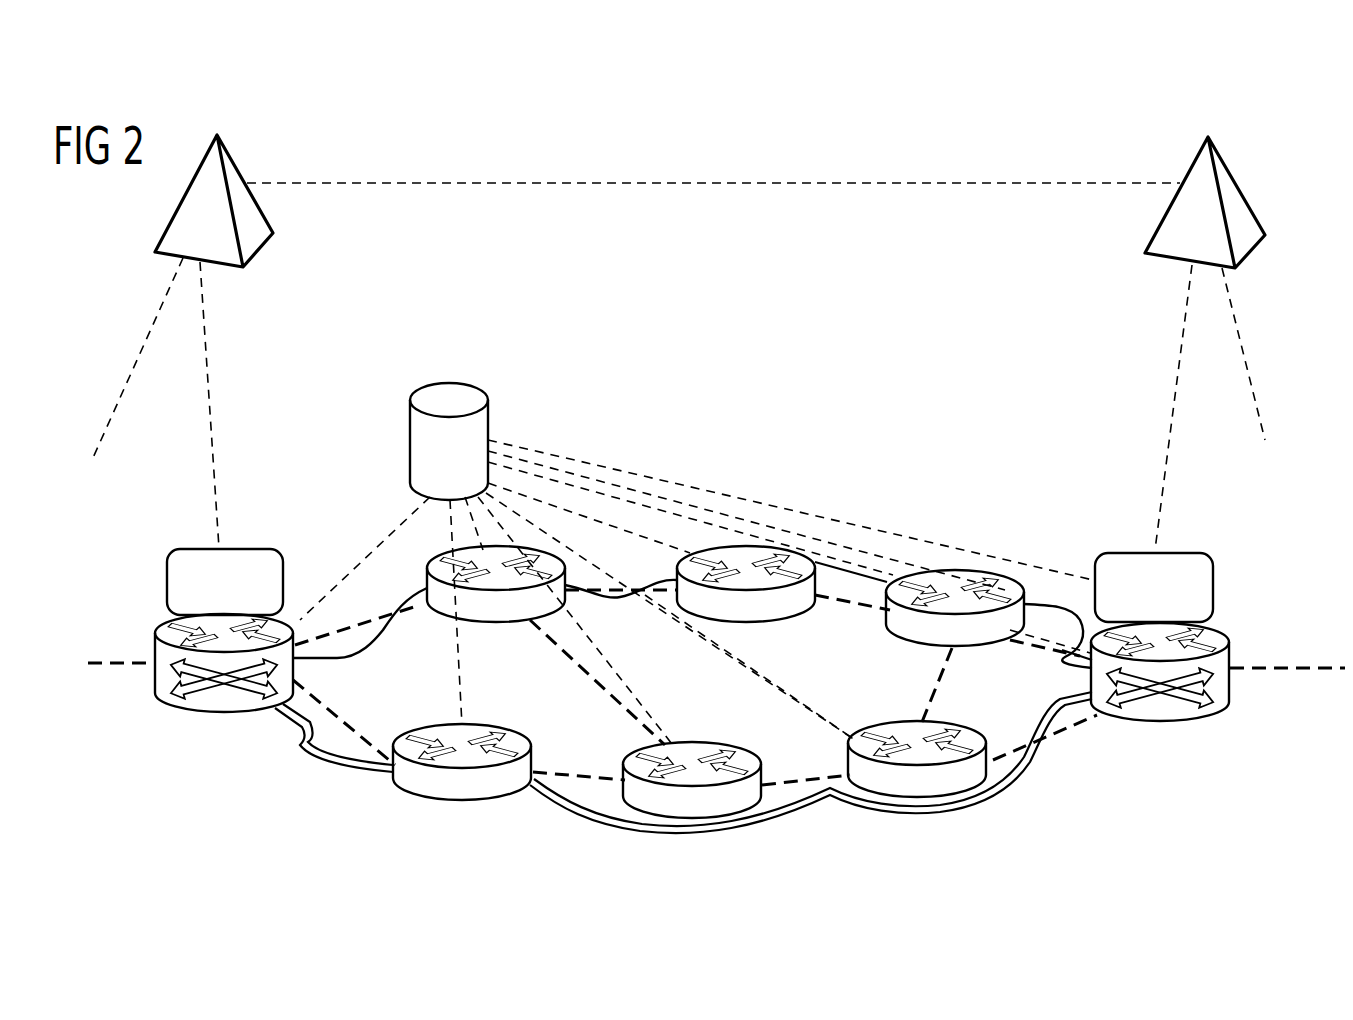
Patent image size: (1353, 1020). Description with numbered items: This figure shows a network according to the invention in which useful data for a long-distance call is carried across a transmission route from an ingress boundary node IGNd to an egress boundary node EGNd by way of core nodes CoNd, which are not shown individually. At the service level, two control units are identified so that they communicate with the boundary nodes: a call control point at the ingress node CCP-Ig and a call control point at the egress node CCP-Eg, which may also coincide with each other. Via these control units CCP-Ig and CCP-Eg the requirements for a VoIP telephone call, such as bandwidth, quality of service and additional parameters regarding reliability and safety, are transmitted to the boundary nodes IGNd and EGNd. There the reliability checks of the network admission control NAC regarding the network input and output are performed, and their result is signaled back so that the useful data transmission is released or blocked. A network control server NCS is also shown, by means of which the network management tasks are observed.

The call control point at ingress node CCP-Ig is at (205, 337).
The call control point at egress node CCP-Eg is at (1227, 338).
The network control server NCS is at (696, 563).
The network admission control NAC is at (690, 585).
The ingress boundary node IGNd is at (224, 685).
The egress boundary node EGNd is at (1160, 691).
The core node CoNd is at (708, 682).